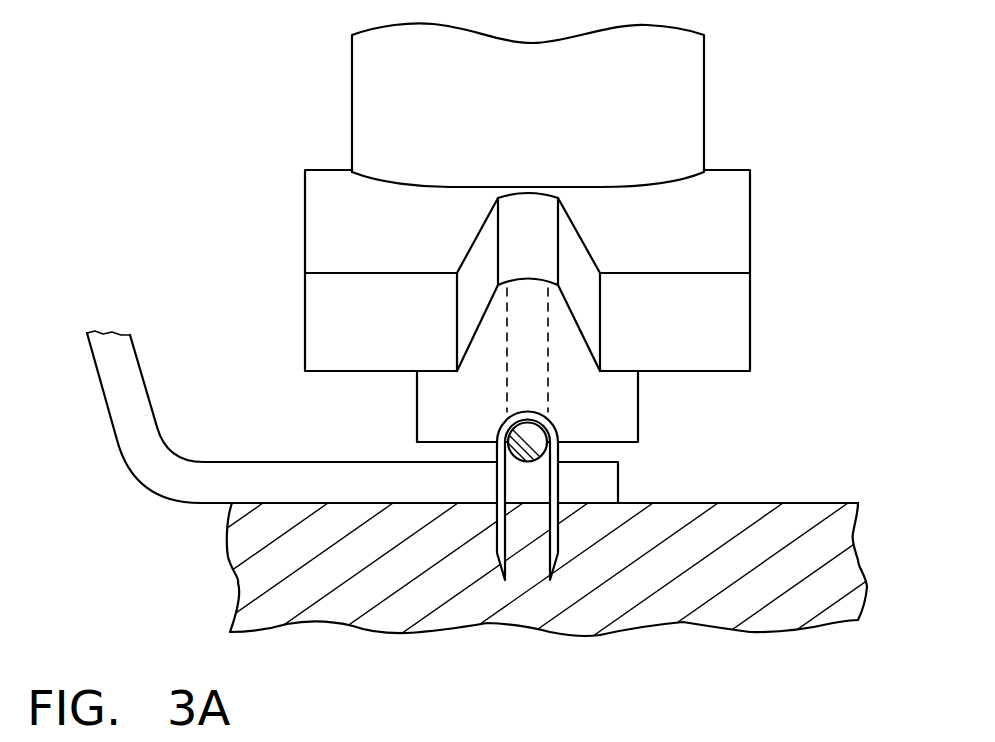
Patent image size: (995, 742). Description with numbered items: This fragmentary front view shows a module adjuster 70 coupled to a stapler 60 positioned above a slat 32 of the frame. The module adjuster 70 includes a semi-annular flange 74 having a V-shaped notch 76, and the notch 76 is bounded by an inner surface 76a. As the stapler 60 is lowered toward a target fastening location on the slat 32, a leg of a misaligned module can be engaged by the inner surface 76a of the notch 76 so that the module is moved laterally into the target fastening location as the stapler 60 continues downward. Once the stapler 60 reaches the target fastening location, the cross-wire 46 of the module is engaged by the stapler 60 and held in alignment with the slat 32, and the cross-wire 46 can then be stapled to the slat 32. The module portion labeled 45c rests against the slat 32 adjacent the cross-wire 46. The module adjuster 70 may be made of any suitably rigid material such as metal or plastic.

The slat 32 is at (802, 515).
The clip arm / plate 45c is at (320, 462).
The cross-wire 46 is at (503, 433).
The stapler 60 is at (627, 425).
The module adjuster 70 is at (676, 54).
The second semi-annular flange 74 is at (593, 205).
The V-shaped notch portion 76 is at (590, 252).
The inner surface of notch 76a is at (587, 313).